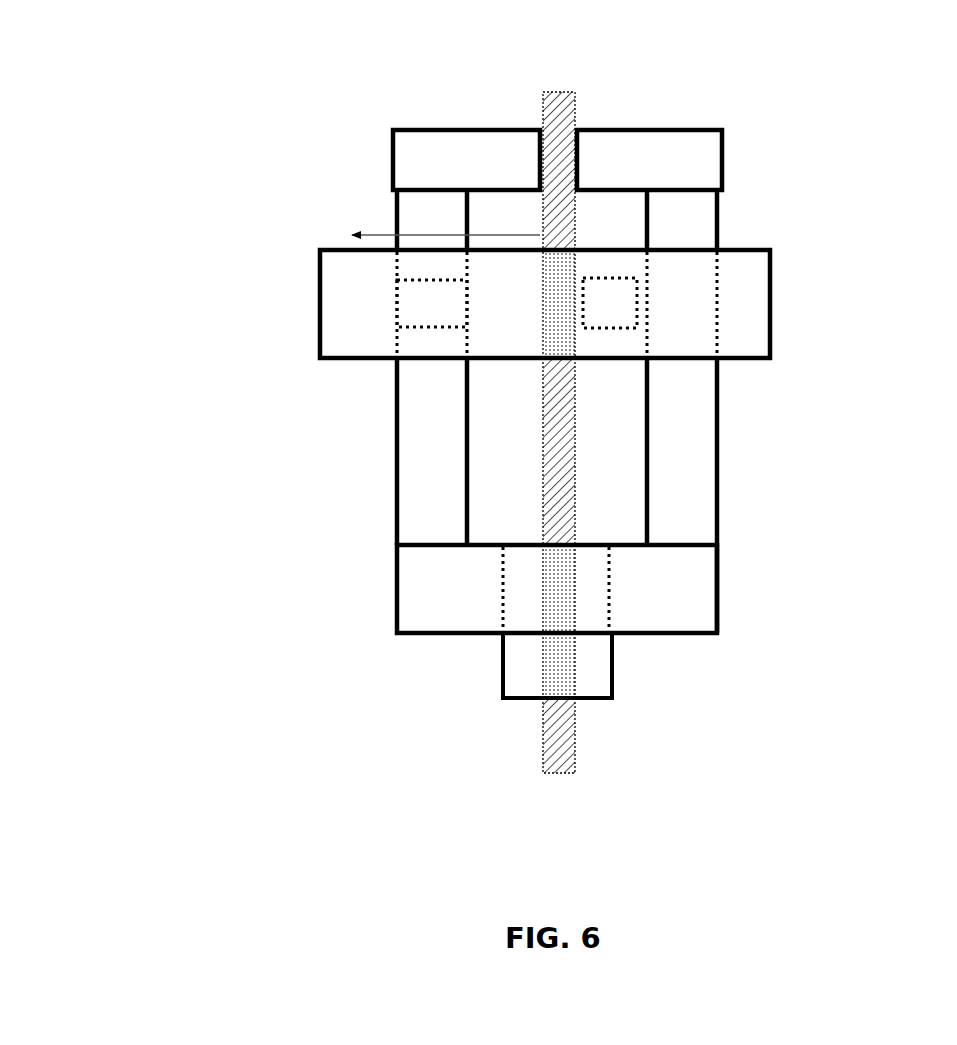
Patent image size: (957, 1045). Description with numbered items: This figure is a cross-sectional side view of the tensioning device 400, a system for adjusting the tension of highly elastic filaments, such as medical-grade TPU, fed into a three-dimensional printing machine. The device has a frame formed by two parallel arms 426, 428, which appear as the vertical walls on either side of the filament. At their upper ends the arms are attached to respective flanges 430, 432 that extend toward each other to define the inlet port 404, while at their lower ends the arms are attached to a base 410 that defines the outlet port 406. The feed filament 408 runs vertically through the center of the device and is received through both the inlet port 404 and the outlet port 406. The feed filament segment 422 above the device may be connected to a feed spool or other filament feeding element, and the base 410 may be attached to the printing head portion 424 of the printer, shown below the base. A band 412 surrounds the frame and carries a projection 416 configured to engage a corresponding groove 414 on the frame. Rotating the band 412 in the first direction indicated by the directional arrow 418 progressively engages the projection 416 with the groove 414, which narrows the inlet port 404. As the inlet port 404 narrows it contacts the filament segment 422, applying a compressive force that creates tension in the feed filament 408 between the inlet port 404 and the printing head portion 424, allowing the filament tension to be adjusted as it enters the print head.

The tensioning device 400 is at (297, 152).
The inlet port 404 is at (580, 168).
The outlet port 406 is at (578, 545).
The feed filament 408 is at (520, 465).
The base 410 is at (462, 640).
The band 412 is at (770, 268).
The groove 414 is at (418, 332).
The projection 416 is at (600, 330).
The directional arrow 418 is at (434, 211).
The feed filament segment 422 is at (560, 90).
The printing head portion 424 is at (615, 665).
The arm 426 is at (420, 443).
The arm 428 is at (703, 513).
The flange 430 is at (489, 145).
The flange 432 is at (725, 590).